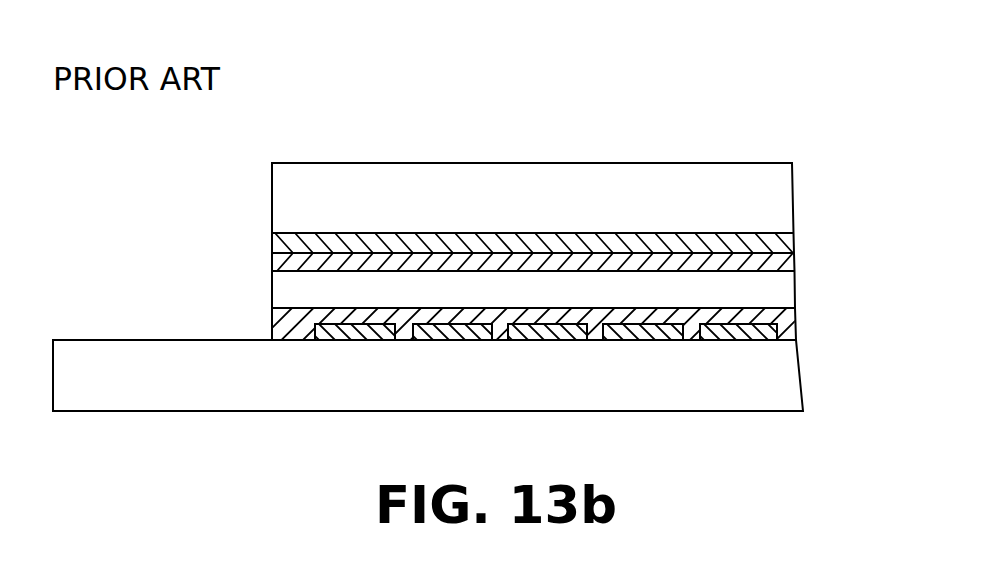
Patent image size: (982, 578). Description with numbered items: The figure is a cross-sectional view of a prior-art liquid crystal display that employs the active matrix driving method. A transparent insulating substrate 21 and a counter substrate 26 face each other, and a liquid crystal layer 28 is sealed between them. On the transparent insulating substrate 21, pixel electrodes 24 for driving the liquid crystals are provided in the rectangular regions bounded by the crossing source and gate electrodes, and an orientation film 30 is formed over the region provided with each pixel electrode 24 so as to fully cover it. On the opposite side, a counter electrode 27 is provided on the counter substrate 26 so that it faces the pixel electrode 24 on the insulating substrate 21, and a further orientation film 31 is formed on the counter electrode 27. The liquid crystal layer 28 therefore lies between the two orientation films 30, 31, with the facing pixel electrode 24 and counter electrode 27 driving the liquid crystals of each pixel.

The transparent insulating substrate 21 is at (787, 398).
The pixel electrode 24 is at (800, 345).
The counter substrate 26 is at (765, 192).
The counter electrode 27 is at (795, 240).
The liquid crystal layer 28 is at (787, 295).
The orientation film 30 is at (795, 320).
The orientation film 31 is at (790, 270).